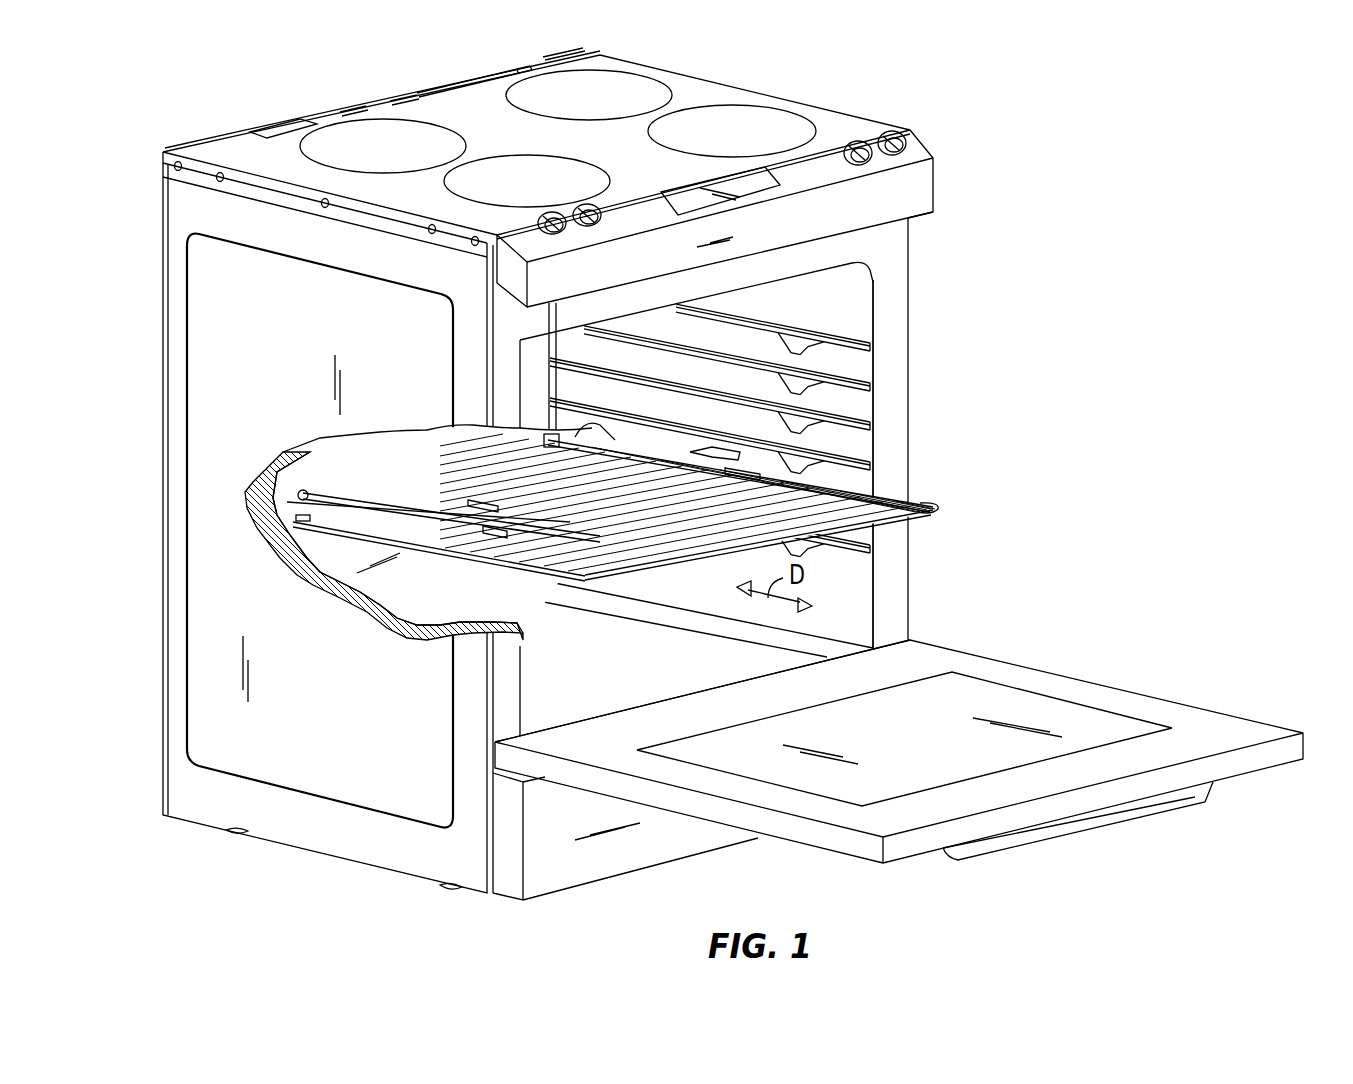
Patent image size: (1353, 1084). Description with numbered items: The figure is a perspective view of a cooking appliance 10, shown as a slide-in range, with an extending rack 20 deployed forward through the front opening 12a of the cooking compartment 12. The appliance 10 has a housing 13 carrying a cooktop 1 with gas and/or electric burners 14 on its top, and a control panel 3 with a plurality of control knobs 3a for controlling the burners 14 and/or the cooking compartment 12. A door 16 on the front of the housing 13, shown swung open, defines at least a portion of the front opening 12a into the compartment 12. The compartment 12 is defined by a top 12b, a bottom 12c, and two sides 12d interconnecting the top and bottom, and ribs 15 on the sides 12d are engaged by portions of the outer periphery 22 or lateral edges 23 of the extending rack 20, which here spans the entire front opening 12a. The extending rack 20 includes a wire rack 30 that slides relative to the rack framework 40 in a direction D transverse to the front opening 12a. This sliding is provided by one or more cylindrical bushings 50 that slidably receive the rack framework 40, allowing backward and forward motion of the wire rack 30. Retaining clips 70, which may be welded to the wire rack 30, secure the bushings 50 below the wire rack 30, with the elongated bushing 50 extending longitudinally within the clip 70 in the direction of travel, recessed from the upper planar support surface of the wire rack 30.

The cooktop 1 is at (703, 97).
The burners 14 is at (773, 130).
The control panel 3 is at (828, 162).
The control knobs 3a is at (890, 138).
The cooking appliance 10 is at (1006, 126).
The housing 13 is at (210, 305).
The cooking compartment 12 is at (856, 609).
The front opening 12a is at (534, 684).
The top 12b is at (782, 280).
The bottom 12c is at (620, 645).
The sides 12d is at (340, 558).
The ribs 15 is at (632, 372).
The door 16 is at (1225, 732).
The extending rack 20 is at (840, 460).
The outer periphery 22 is at (594, 412).
The lateral edges 23 is at (653, 447).
The wire rack 30 is at (942, 476).
The rack framework 40 is at (716, 444).
The cylindrical bushing 50 is at (493, 533).
The retaining clip 70 is at (741, 462).